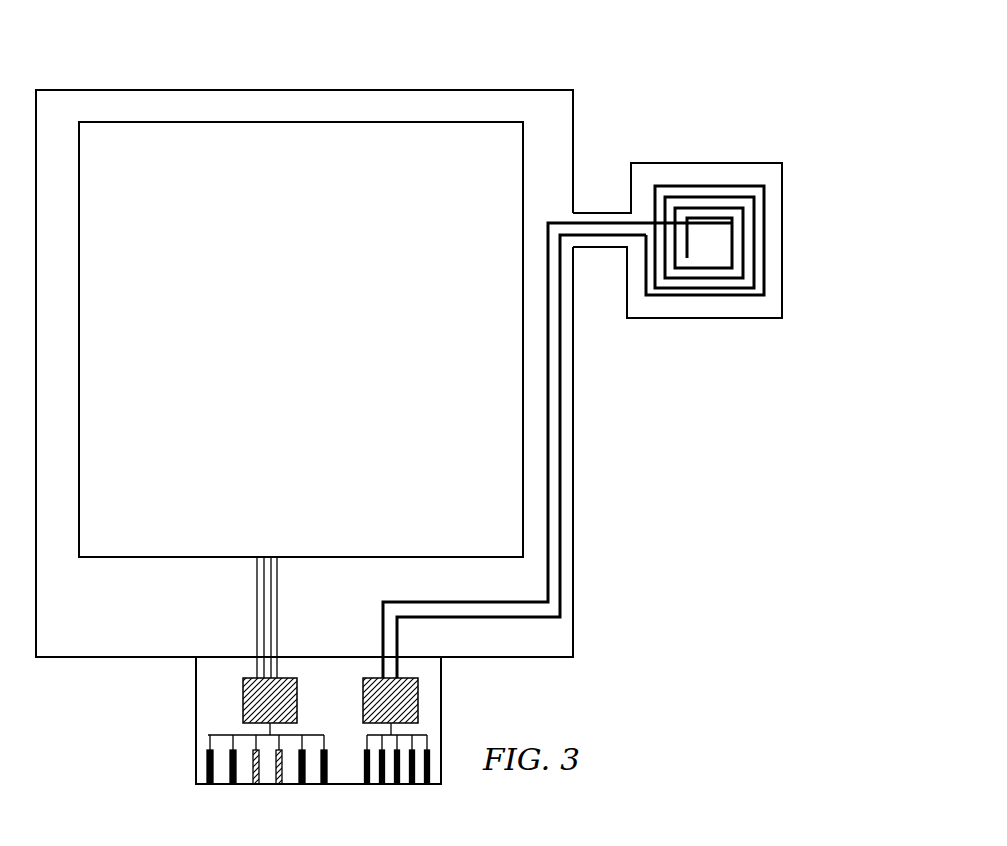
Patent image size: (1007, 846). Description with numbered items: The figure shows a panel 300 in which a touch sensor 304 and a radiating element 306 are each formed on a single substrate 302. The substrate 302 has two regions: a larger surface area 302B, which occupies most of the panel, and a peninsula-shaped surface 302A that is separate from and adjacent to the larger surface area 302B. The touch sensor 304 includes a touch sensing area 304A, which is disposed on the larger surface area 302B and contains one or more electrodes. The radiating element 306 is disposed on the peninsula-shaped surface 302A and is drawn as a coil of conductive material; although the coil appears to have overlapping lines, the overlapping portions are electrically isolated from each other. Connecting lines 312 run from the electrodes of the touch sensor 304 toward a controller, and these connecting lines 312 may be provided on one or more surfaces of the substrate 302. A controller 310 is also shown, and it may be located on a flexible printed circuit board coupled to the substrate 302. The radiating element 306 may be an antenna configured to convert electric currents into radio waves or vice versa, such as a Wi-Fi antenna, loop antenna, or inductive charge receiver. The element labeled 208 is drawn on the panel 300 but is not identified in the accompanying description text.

The panel 300 is at (630, 54).
The substrate 302 is at (565, 463).
The peninsula-shaped surface 302A is at (782, 112).
The larger surface area 302B is at (573, 67).
The touch sensor 304 is at (141, 563).
The touch sensing area 304A is at (198, 545).
The radiating element 306 is at (733, 165).
The controller 310 is at (419, 700).
The connecting lines 312 is at (246, 617).
The touch sensor connector pad 208 is at (242, 701).